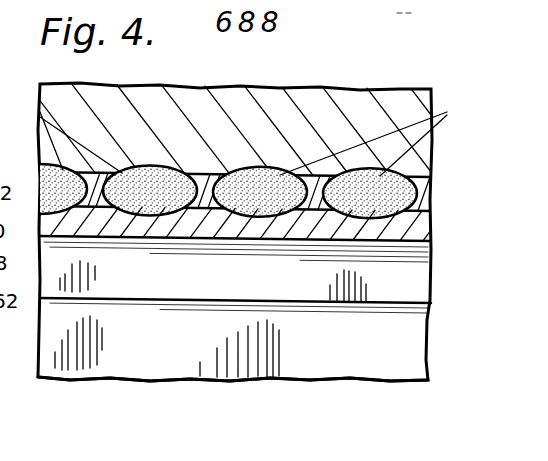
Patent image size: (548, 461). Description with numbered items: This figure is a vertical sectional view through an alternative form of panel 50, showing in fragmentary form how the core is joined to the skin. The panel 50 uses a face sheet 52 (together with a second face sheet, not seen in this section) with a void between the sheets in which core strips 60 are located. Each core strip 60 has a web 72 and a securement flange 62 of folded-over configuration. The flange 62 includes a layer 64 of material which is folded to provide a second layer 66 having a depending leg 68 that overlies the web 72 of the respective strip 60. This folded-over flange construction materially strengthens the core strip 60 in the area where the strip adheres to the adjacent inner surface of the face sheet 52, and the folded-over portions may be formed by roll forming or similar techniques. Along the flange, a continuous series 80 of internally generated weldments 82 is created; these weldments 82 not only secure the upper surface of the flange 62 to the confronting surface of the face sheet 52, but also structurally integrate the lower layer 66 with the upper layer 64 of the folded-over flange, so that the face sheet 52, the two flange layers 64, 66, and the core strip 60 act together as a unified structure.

The panel 50 is at (287, 84).
The face sheet 52 is at (349, 100).
The core strip 60 is at (150, 380).
The securement flange 62 is at (420, 225).
The layer 64 is at (423, 203).
The layer 66 is at (430, 252).
The depending leg 68 is at (411, 286).
The web 72 is at (347, 370).
The continuous series of weldments 80 is at (407, 169).
The weldment 82 is at (440, 114).